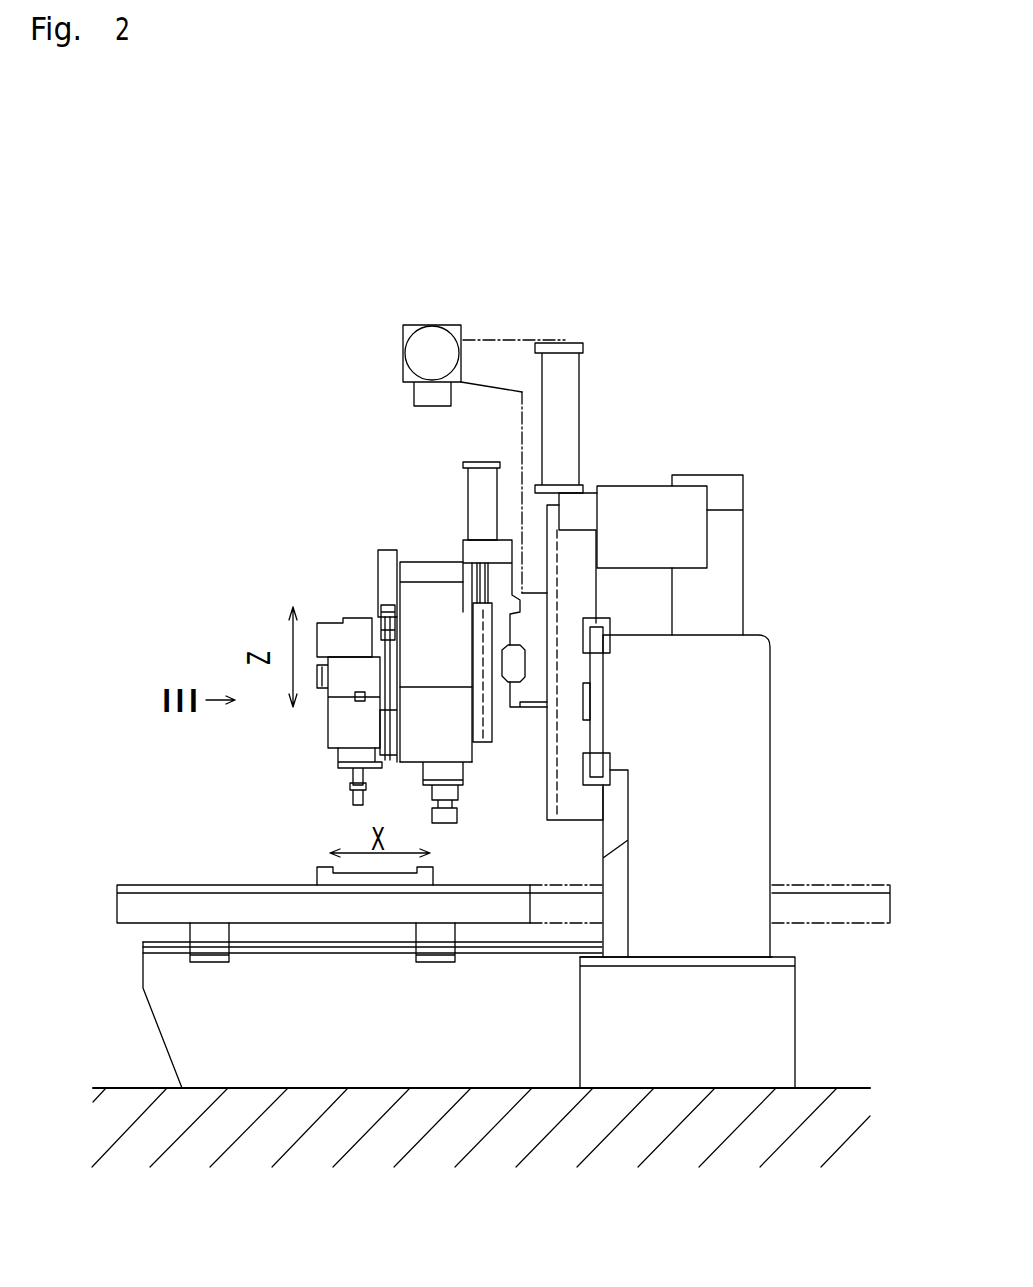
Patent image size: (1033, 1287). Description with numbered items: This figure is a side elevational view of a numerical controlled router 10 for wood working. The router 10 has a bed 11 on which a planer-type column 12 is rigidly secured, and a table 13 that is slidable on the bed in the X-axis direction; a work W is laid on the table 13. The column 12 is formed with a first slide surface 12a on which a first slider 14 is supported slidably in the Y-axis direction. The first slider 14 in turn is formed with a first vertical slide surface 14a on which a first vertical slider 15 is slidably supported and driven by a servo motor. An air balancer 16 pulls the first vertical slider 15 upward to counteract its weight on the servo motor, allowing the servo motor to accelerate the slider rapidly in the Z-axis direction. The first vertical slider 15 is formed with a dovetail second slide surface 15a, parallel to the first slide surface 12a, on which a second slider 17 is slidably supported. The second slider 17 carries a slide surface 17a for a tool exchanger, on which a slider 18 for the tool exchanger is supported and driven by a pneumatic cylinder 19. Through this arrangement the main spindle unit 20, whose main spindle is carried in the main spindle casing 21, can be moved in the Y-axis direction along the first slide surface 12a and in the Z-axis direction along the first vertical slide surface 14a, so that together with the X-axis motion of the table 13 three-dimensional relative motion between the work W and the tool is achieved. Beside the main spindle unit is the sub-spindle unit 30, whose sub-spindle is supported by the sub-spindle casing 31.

The router 10 is at (273, 408).
The bed 11 is at (185, 1010).
The column 12 is at (740, 748).
The first slide surface 12a is at (598, 645).
The table 13 is at (232, 902).
The first slider 14 is at (576, 812).
The first vertical slide surface 14a is at (553, 741).
The first vertical slider 15 is at (533, 608).
The second slide surface 15a is at (525, 712).
The air balancer 16 is at (563, 387).
The second slider 17 is at (500, 573).
The slide surface for tool exchanger 17a is at (486, 742).
The slider for tool exchanger 18 is at (477, 628).
The pneumatic cylinder 19 is at (470, 480).
The main spindle unit 20 is at (405, 555).
The main spindle casing 21 is at (422, 738).
The sub-spindle unit 30 is at (339, 599).
The sub-spindle casing 31 is at (338, 732).
The work W is at (322, 867).